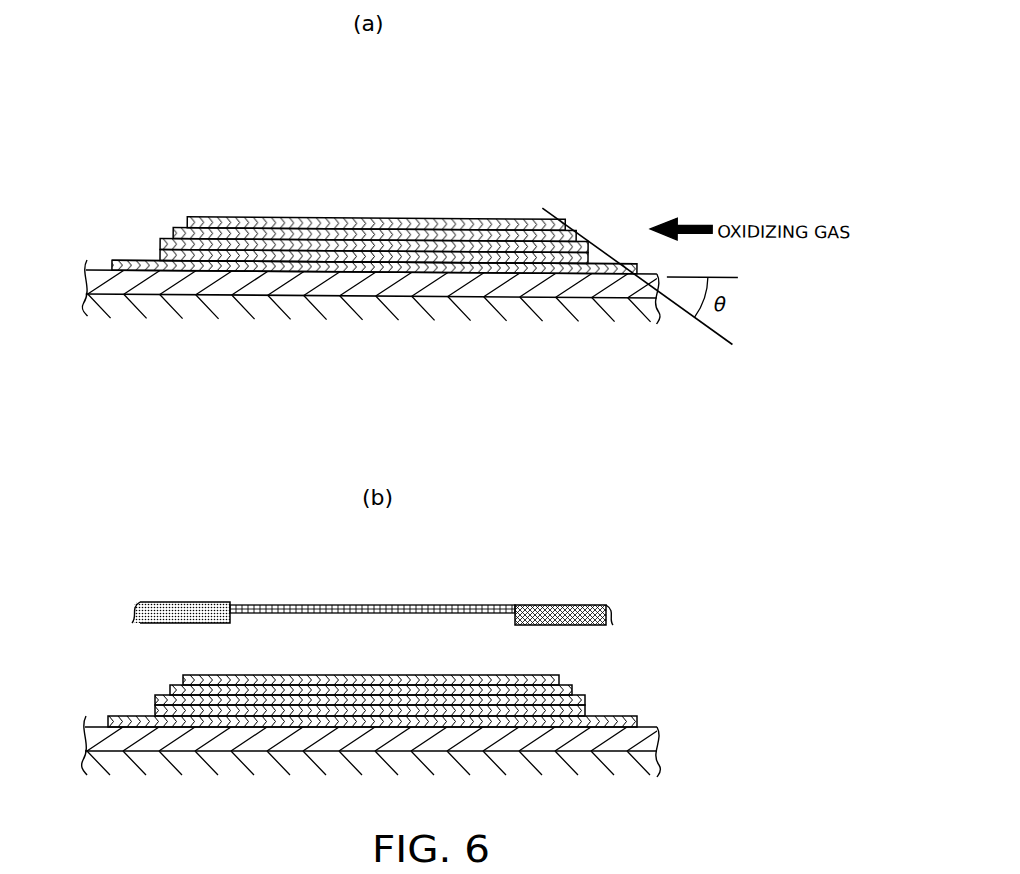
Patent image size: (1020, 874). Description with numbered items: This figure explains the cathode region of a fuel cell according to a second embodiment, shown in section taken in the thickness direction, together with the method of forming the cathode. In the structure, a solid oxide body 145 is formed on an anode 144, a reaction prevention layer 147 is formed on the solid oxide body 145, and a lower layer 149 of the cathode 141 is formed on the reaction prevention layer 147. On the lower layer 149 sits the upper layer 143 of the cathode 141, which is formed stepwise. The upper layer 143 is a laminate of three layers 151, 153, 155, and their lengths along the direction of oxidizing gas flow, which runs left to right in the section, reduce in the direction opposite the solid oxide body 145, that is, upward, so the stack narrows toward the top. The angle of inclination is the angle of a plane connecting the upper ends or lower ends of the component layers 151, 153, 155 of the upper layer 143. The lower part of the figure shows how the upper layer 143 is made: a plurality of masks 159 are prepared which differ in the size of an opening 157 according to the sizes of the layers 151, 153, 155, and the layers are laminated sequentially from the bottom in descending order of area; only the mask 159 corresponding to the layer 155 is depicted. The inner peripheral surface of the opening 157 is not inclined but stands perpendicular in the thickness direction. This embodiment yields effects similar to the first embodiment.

The cathode 141 is at (374, 165).
The upper layer 143 is at (374, 160).
The anode 144 is at (123, 310).
The solid oxide body 145 is at (105, 272).
The reaction prevention layer 147 is at (140, 262).
The lower layer 149 is at (357, 251).
The layer 151 is at (315, 240).
The layer 153 is at (293, 229).
The layer 155 is at (278, 218).
The opening 157 is at (504, 602).
The mask 159 is at (553, 615).